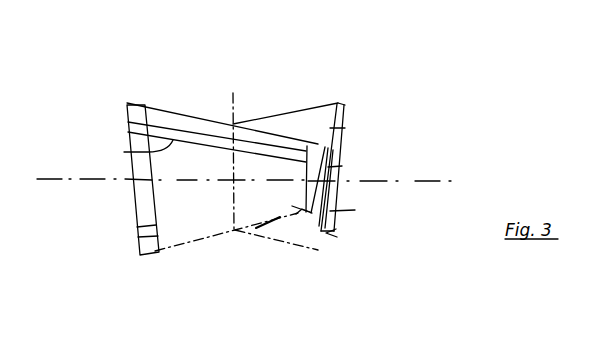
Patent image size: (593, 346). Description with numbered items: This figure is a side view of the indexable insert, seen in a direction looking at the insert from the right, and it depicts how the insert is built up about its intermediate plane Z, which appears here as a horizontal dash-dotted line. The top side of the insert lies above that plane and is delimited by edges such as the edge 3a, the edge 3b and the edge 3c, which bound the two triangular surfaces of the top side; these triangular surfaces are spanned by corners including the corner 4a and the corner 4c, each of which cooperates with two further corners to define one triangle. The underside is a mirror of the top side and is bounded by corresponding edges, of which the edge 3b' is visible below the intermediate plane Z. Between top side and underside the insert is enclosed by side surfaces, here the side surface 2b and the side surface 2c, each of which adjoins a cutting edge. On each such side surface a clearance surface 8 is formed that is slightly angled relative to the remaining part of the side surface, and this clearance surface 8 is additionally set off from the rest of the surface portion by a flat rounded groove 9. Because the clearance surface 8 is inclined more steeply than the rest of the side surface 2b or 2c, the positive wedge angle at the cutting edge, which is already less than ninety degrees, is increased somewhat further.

The side surface 2b is at (330, 168).
The side surface 2c is at (205, 195).
The edge 3a is at (290, 111).
The edge 3b is at (374, 166).
The edge 3b' is at (332, 241).
The edge 3c is at (210, 119).
The corner 4a is at (340, 102).
The corner 4c is at (127, 106).
The clearance surface 8 is at (177, 121).
The flat rounded groove 9 is at (128, 153).
The intermediate plane Z is at (53, 182).